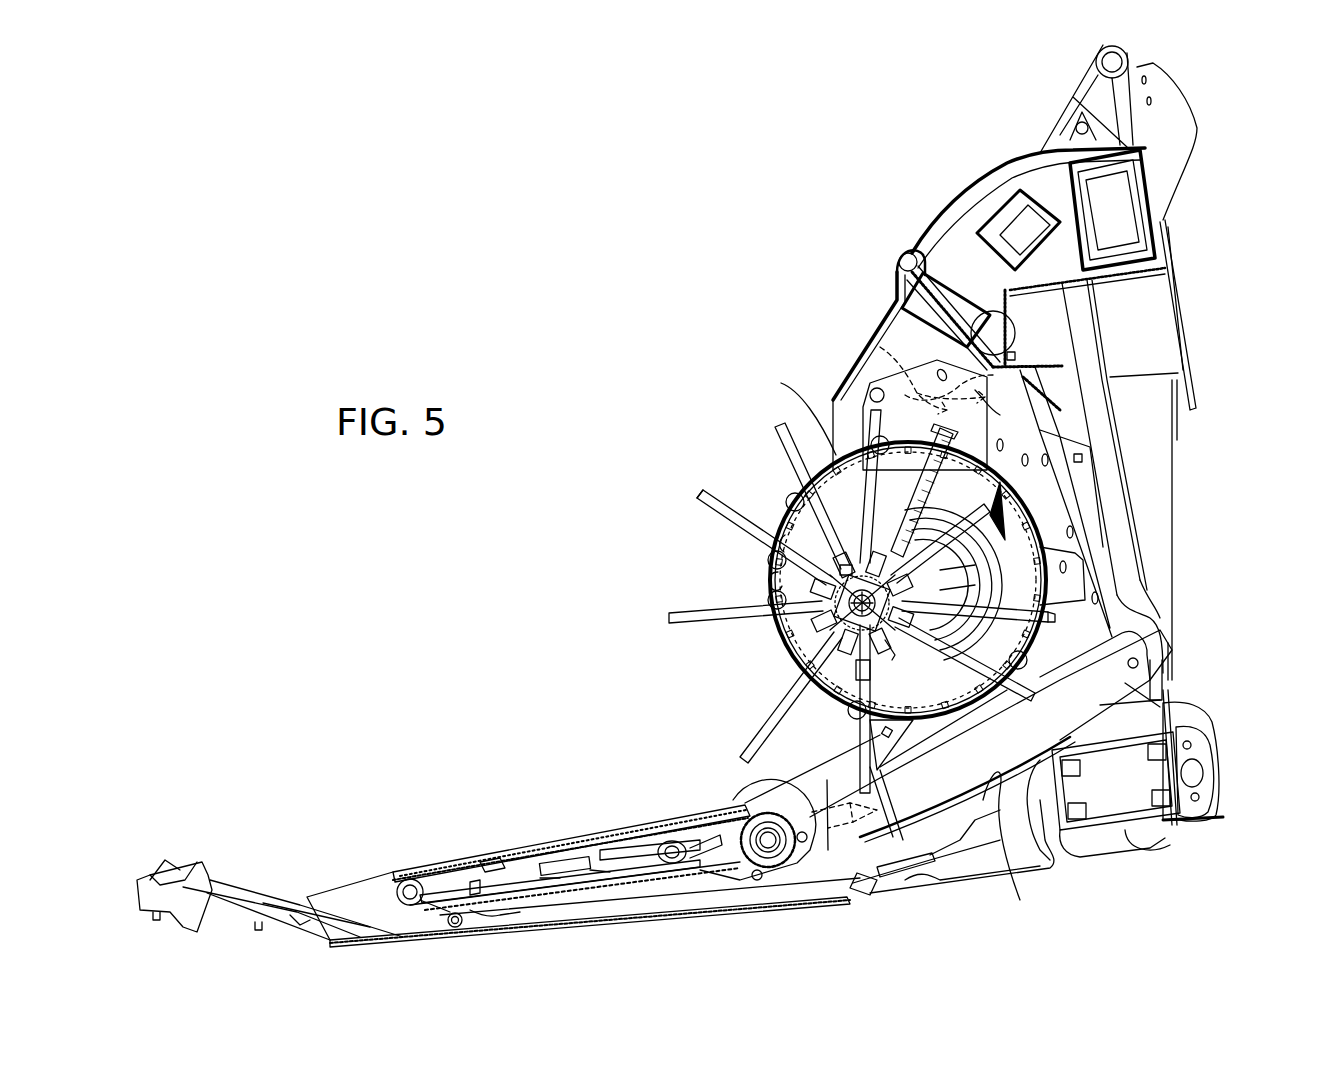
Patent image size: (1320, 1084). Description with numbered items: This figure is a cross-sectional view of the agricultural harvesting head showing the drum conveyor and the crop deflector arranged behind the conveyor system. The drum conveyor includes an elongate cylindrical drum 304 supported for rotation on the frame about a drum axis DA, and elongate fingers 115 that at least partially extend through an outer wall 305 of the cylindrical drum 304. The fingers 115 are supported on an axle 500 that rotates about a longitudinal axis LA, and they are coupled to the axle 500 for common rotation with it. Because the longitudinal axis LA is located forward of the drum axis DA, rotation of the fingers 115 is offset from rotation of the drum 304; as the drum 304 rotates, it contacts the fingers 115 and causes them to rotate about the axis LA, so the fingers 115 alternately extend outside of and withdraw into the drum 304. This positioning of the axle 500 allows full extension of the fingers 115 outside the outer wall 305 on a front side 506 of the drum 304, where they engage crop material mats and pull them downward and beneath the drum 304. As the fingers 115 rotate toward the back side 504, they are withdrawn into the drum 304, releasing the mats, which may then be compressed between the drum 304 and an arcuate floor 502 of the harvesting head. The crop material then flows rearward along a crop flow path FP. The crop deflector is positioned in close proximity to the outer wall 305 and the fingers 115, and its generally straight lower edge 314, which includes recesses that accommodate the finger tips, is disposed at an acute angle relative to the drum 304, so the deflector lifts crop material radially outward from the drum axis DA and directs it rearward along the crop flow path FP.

The outer wall 305 is at (836, 445).
The elongate fingers 115 is at (730, 510).
The front side 506 is at (760, 572).
The cylindrical drum 304 is at (780, 636).
The axle 500 is at (795, 640).
The longitudinal axis LA is at (825, 707).
The crop flow path FP is at (823, 852).
The arcuate floor 502 is at (985, 800).
The lower edge 314 is at (1040, 432).
The back side 504 is at (980, 503).
The drum axis DA is at (1000, 545).